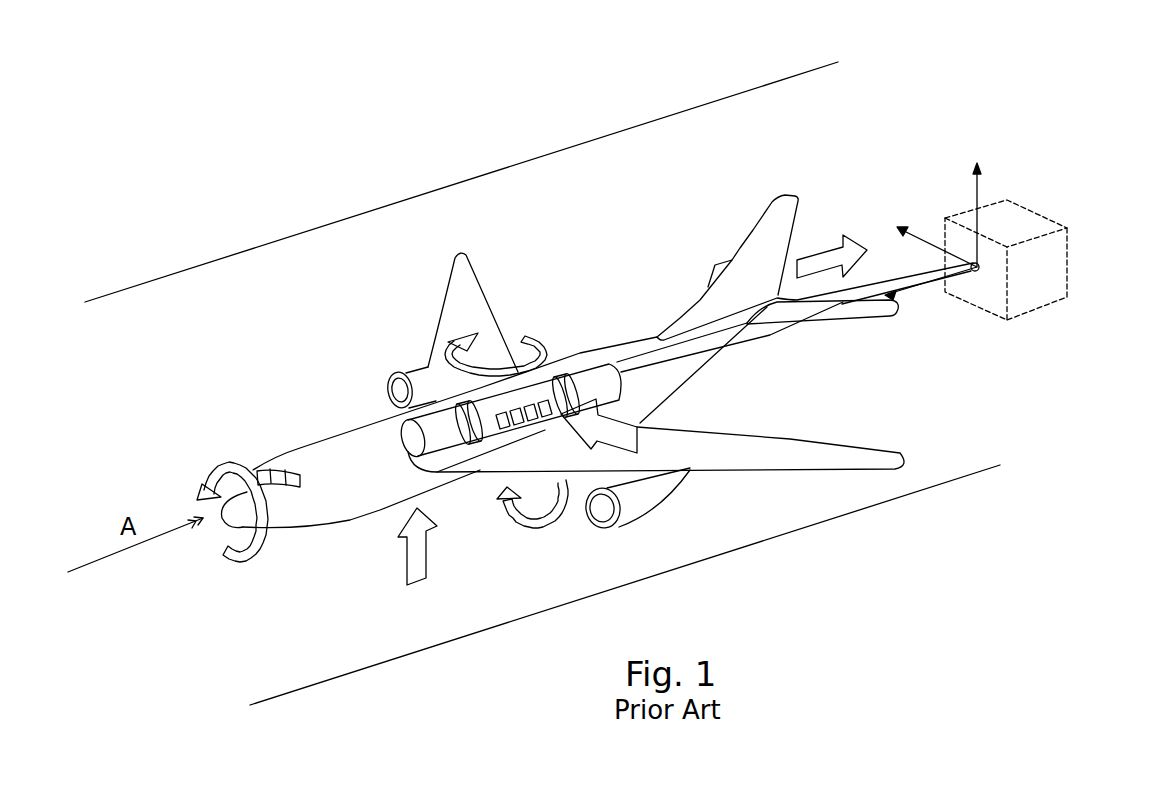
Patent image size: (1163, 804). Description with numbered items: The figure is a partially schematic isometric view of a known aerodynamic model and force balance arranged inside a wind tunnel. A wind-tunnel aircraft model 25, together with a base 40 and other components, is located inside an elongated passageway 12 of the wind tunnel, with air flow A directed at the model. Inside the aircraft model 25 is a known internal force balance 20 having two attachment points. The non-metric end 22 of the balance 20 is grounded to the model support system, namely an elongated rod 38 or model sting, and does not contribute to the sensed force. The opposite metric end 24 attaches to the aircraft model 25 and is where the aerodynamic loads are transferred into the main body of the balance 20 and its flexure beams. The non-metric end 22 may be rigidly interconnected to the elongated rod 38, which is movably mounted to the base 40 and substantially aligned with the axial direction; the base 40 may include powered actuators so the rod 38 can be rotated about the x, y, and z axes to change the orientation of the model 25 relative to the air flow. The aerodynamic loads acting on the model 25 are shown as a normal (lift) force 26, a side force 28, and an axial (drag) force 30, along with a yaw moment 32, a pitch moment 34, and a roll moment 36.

The elongated passageway 12 is at (752, 545).
The internal force balance 20 is at (577, 372).
The non-metric end 22 is at (610, 360).
The metric end 24 is at (400, 433).
The wind-tunnel aircraft model 25 is at (337, 424).
The normal (lift) force 26 is at (407, 567).
The side force 28 is at (640, 443).
The axial (drag) force 30 is at (822, 250).
The yaw moment 32 is at (540, 332).
The pitch moment 34 is at (528, 528).
The roll moment 36 is at (266, 542).
The elongated rod 38 is at (865, 292).
The base 40 is at (1068, 265).